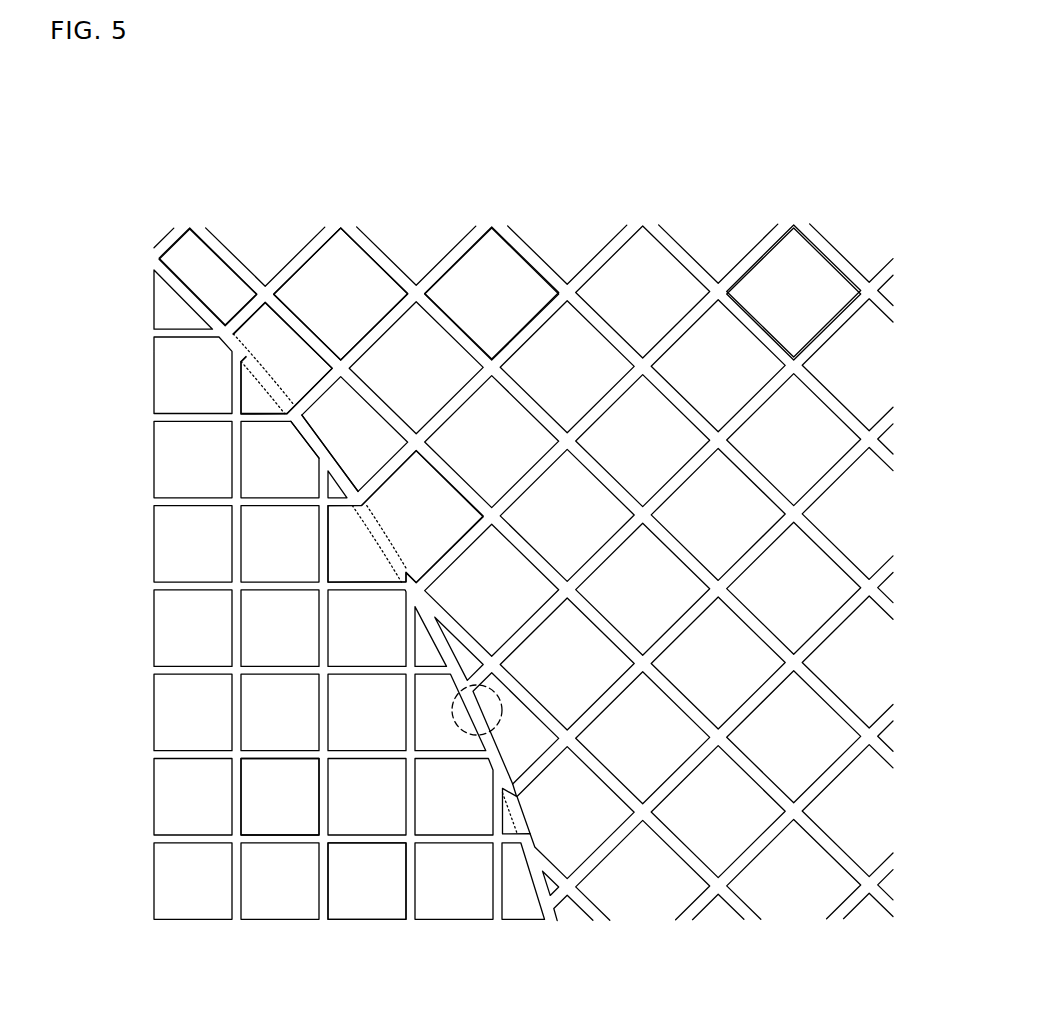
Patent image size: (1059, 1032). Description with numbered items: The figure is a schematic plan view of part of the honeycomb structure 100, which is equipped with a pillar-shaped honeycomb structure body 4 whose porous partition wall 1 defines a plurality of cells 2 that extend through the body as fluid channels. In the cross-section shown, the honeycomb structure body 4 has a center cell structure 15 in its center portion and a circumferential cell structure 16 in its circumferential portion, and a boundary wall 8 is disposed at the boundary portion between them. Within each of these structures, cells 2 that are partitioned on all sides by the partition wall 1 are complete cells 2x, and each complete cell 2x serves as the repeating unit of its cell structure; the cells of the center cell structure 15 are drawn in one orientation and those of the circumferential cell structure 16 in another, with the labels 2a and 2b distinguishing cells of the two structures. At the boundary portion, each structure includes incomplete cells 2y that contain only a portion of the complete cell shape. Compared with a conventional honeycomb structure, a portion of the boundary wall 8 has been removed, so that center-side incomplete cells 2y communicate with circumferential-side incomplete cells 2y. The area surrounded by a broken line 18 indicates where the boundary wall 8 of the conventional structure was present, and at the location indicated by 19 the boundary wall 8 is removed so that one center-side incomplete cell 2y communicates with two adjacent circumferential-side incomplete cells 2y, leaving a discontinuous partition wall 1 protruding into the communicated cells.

The partition wall 1 is at (492, 360).
The cells 2 is at (459, 565).
The first cell 2a is at (253, 393).
The second cell 2b is at (205, 275).
The complete cell 2x is at (345, 240).
The incomplete cell 2y is at (205, 275).
The honeycomb structure body 4 is at (819, 211).
The boundary wall 8 is at (305, 452).
The center cell structure 15 is at (188, 796).
The circumferential cell structure 16 is at (789, 872).
The area surrounded by a broken line 18 is at (378, 538).
The removed portion of boundary wall 19 is at (488, 713).
The honeycomb structure 100 is at (800, 57).